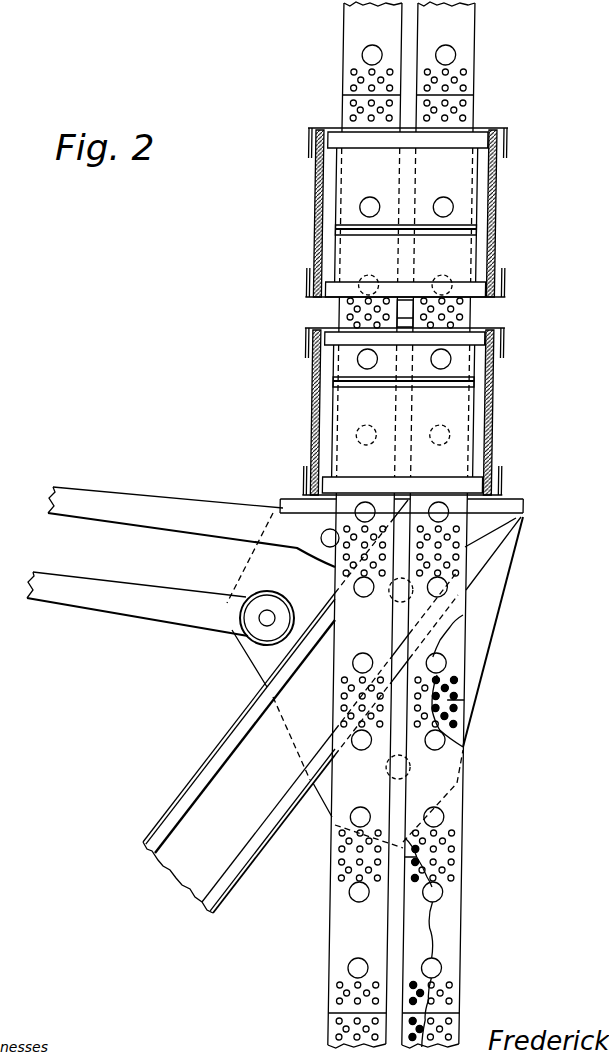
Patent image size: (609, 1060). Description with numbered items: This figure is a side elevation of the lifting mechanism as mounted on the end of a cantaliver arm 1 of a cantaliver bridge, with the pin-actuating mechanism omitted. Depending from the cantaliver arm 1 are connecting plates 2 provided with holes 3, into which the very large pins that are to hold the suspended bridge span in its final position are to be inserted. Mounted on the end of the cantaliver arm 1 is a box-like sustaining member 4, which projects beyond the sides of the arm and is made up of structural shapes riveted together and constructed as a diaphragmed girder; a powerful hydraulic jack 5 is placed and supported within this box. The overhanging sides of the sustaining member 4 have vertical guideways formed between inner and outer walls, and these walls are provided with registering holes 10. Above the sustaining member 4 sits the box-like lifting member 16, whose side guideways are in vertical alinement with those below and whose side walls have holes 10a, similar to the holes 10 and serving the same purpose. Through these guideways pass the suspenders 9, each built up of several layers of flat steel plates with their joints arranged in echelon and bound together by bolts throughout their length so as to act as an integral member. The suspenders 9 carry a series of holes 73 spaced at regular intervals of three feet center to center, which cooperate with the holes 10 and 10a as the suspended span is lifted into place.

The cantaliver arm 1 is at (187, 504).
The connecting plates 2 is at (479, 663).
The holes 3 is at (403, 600).
The sustaining member 4 is at (481, 421).
The hydraulic jack 5 is at (407, 328).
The suspenders 9 is at (343, 95).
The holes 10 is at (448, 366).
The holes 10a is at (376, 185).
The lifting member 16 is at (498, 217).
The holes 73 is at (454, 55).